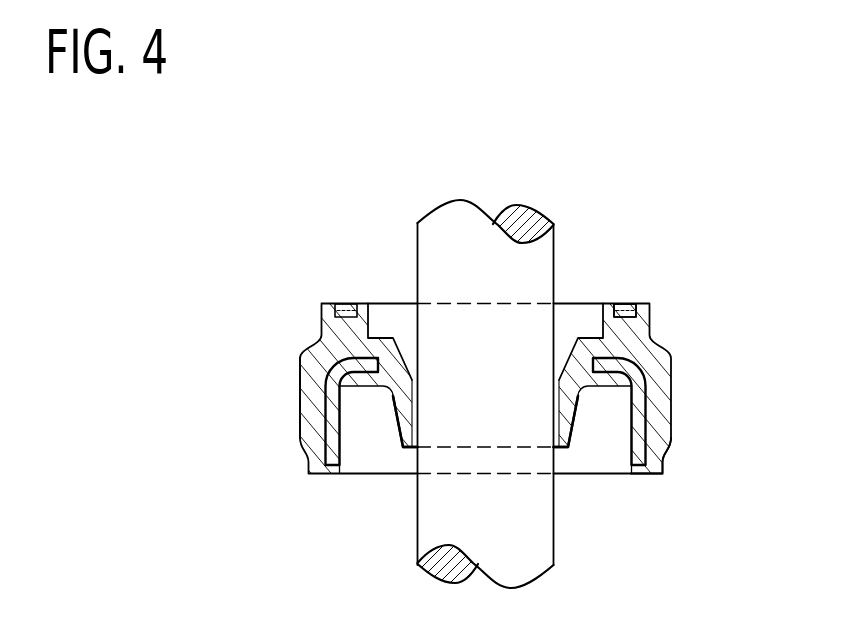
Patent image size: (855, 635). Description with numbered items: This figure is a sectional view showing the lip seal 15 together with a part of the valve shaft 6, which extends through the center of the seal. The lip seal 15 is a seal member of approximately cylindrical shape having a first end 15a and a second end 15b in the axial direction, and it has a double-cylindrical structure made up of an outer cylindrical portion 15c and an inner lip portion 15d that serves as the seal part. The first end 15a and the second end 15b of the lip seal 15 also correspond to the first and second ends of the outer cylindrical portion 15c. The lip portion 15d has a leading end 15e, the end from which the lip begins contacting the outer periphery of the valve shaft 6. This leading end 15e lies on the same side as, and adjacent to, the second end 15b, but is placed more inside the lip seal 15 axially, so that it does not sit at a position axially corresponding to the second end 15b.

The valve shaft 6 is at (443, 216).
The lip seal 15 is at (672, 390).
The first end 15a is at (622, 303).
The second end 15b is at (647, 477).
The outer cylindrical portion 15c is at (300, 392).
The lip portion 15d is at (397, 417).
The leading end 15e is at (558, 453).